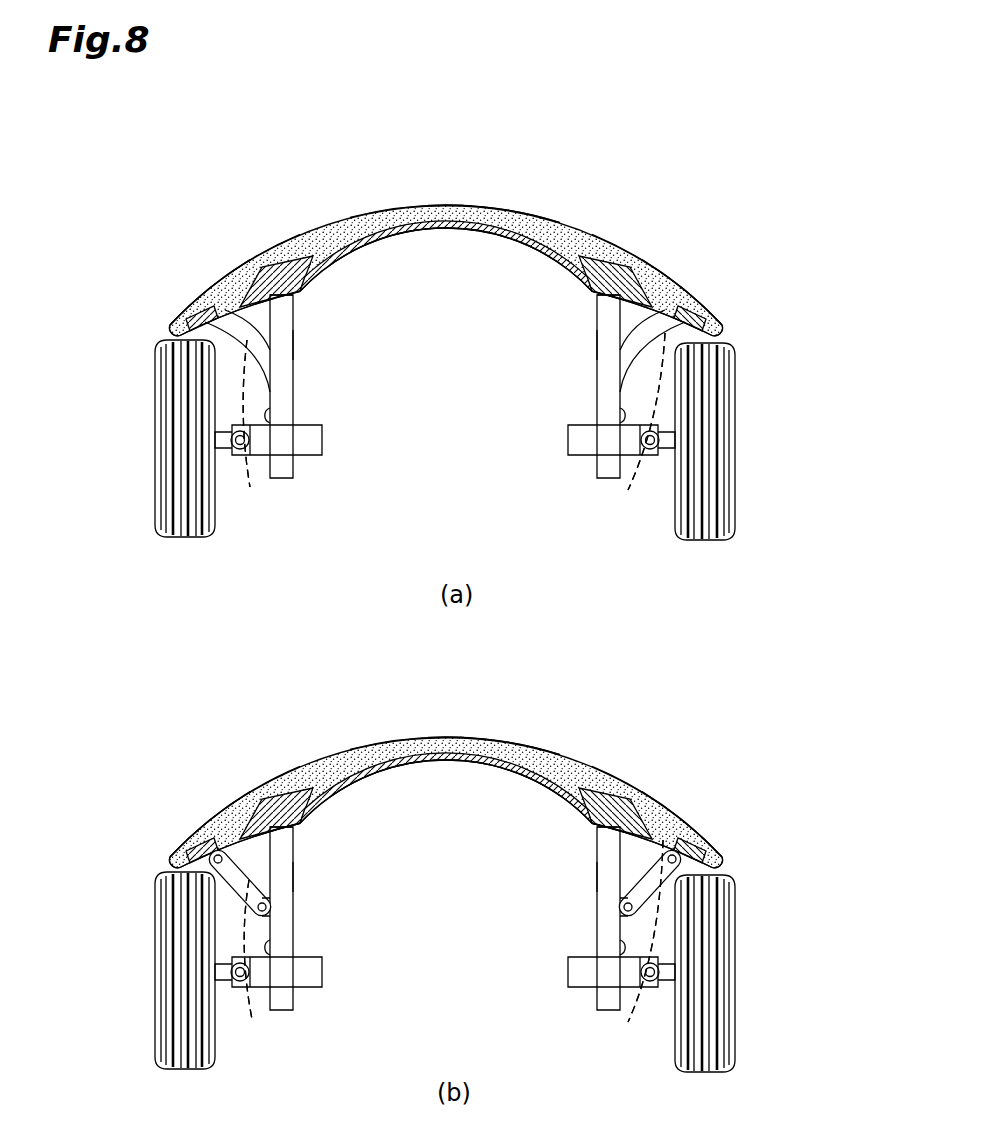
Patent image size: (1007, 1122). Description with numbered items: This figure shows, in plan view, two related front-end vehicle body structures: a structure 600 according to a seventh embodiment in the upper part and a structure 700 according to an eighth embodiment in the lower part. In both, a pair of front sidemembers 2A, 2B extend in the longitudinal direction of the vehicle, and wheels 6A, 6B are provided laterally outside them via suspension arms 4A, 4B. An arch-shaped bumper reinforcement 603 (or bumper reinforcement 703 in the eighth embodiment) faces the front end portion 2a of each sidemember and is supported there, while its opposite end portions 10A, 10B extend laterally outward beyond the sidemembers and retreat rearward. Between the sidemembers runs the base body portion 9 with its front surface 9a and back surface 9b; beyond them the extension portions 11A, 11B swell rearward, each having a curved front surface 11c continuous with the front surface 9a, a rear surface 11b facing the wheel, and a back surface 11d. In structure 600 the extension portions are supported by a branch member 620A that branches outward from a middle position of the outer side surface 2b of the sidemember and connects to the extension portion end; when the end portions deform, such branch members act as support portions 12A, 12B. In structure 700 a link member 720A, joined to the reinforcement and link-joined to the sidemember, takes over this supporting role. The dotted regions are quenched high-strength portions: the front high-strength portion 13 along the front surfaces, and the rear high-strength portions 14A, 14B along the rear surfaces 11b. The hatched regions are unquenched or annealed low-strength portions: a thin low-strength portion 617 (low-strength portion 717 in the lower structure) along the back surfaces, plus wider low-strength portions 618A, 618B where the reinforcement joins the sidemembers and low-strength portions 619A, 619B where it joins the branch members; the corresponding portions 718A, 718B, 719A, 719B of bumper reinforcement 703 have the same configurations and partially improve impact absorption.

The structure for a front part of a vehicle body 600 is at (368, 157).
The structure for a front part of a vehicle body 700 is at (368, 689).
The bumper reinforcement 603 is at (539, 195).
The bumper reinforcement 703 is at (539, 727).
The front high-strength portion 13 is at (418, 205).
The base body portion 9 is at (462, 243).
The front surface 9a is at (480, 208).
The back surface 9b is at (504, 239).
The low-strength portion 617 is at (366, 249).
The inner reinforcing layer 717 is at (366, 781).
The low-strength portion 618A is at (283, 243).
The low-strength portion 618B is at (617, 243).
The low-strength portion 718A is at (283, 775).
The low-strength portion 718B is at (617, 775).
The low-strength portion 619A is at (200, 317).
The low-strength portion 619B is at (690, 300).
The low-strength portion 719A is at (200, 849).
The low-strength portion 719B is at (690, 832).
The extension portion 11A is at (234, 240).
The extension portion 11B is at (667, 249).
The rear surface 11b is at (180, 326).
The front surface 11c is at (223, 284).
The back surface 11d is at (246, 305).
The end portion 10A is at (170, 265).
The end portion 10B is at (740, 251).
The rear high-strength portion 14A is at (197, 331).
The rear high-strength portion 14B is at (700, 338).
The front sidemember 2A is at (283, 392).
The front sidemember 2B is at (602, 407).
The front end portion 2a is at (285, 302).
The outer side surface 2b is at (286, 337).
The suspension arm 4A is at (314, 437).
The suspension arm 4B is at (573, 437).
The wheel 6A is at (170, 447).
The wheel 6B is at (720, 456).
The branch member 620A is at (446, 426).
The link member 720A is at (446, 944).
The support portion 12A is at (286, 694).
The support portion 12B is at (606, 691).